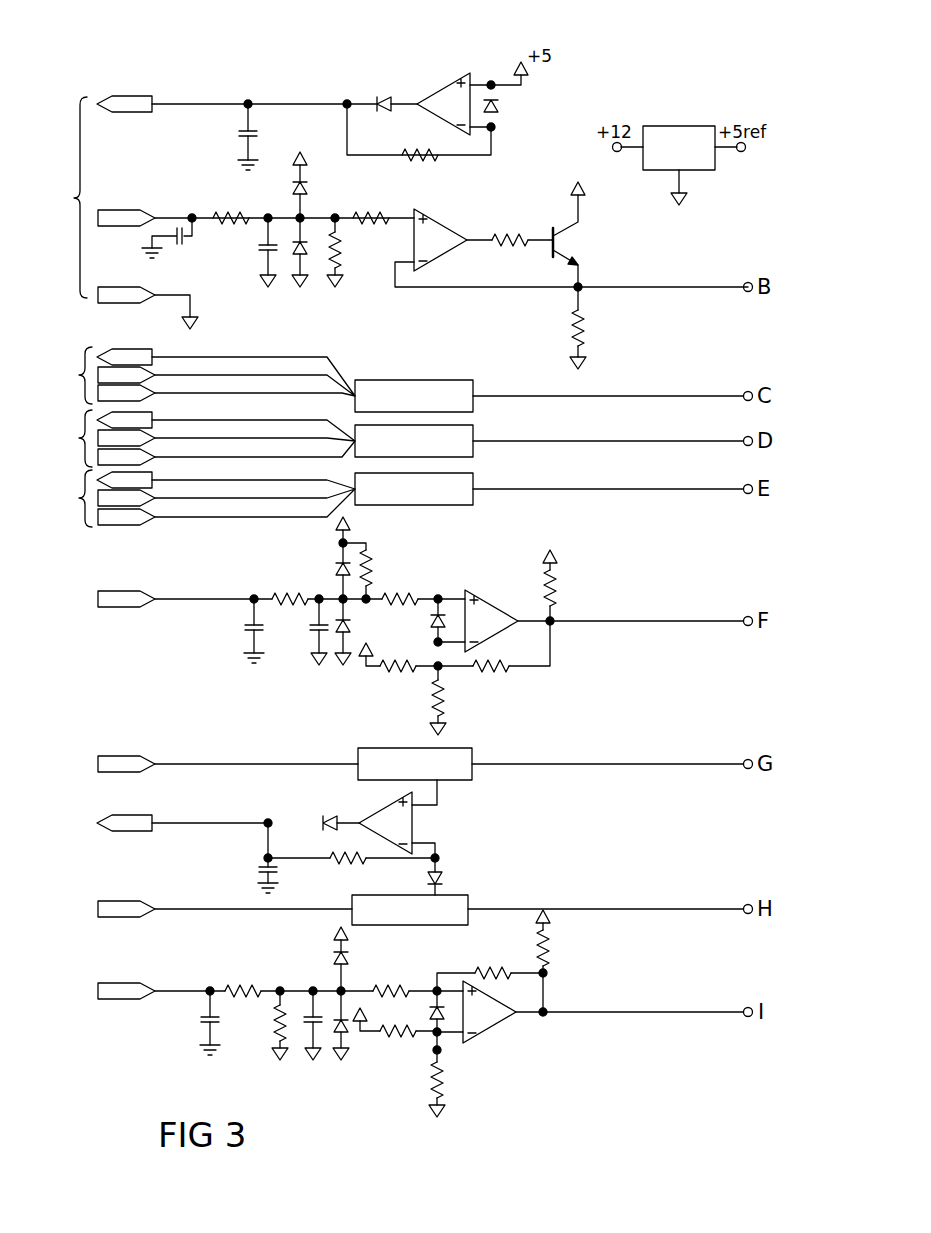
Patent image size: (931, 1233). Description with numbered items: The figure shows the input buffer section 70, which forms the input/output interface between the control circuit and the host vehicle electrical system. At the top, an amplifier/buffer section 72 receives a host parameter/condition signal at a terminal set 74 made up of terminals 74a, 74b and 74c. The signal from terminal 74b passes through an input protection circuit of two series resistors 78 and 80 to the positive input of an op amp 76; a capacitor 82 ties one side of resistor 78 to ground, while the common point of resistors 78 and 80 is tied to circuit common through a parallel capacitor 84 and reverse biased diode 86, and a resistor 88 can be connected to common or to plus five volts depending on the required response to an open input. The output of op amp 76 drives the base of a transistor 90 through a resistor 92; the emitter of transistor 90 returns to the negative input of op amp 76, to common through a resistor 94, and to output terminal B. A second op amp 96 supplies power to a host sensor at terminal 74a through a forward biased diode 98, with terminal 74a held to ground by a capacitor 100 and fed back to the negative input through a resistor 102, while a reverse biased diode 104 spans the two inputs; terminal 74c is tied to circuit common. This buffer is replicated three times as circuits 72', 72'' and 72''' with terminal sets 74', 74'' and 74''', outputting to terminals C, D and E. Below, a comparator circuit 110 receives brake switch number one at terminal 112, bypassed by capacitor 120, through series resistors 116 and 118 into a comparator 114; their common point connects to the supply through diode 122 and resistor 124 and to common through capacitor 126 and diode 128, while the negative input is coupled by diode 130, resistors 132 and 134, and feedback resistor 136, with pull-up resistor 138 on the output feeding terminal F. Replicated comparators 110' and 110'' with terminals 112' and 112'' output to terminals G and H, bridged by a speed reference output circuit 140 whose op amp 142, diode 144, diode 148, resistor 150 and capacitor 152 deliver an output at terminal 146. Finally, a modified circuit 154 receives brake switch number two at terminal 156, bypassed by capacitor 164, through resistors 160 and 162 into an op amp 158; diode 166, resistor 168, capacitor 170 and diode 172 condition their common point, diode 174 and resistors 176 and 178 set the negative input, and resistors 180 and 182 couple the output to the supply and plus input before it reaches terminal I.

The input buffer section 70 is at (123, 58).
The amplifier/buffer section 72 is at (502, 150).
The terminal set 74 is at (65, 197).
The output terminal 74a is at (134, 100).
The terminal 74b is at (132, 212).
The terminal 74c is at (138, 300).
The terminal set 74' is at (99, 375).
The terminal set 74'' is at (96, 439).
The terminal set 74''' is at (94, 499).
The amplifier/buffer circuit 72' is at (414, 396).
The amplifier/buffer circuit 72'' is at (414, 441).
The amplifier/buffer circuit 72''' is at (414, 489).
The op amp 76 is at (440, 226).
The resistor 78 is at (226, 215).
The resistor 80 is at (370, 212).
The capacitor 82 is at (182, 244).
The capacitor 84 is at (258, 260).
The diode 86 is at (304, 262).
The resistor 88 is at (344, 256).
The transistor 90 is at (570, 238).
The resistor 92 is at (504, 234).
The resistor 94 is at (586, 326).
The op amp 96 is at (448, 92).
The diode 98 is at (386, 98).
The capacitor 100 is at (240, 133).
The resistor 102 is at (416, 152).
The diode 104 is at (500, 104).
The circuit 110 is at (492, 552).
The comparator circuit 110' is at (415, 764).
The comparator circuit 110'' is at (410, 910).
The terminal 112 is at (117, 577).
The terminal 112' is at (117, 742).
The terminal 112'' is at (116, 926).
The comparator 114 is at (492, 606).
The resistor 116 is at (290, 590).
The resistor 118 is at (396, 595).
The capacitor 120 is at (244, 632).
The diode 122 is at (336, 568).
The resistor 124 is at (371, 569).
The capacitor 126 is at (308, 638).
The diode 128 is at (350, 637).
The diode 130 is at (432, 632).
The resistor 132 is at (376, 672).
The resistor 134 is at (446, 704).
The resistor 136 is at (502, 670).
The resistor 138 is at (558, 590).
The speed reference output circuit 140 is at (477, 830).
The op amp 142 is at (386, 822).
The diode 144 is at (445, 876).
The output terminal 146 is at (134, 828).
The diode 148 is at (324, 818).
The resistor 150 is at (340, 864).
The capacitor 152 is at (252, 872).
The modified circuit 154 is at (540, 1065).
The terminal 156 is at (124, 992).
The op amp 158 is at (488, 1016).
The resistor 160 is at (226, 984).
The resistor 162 is at (385, 986).
The capacitor 164 is at (200, 1020).
The diode 166 is at (334, 962).
The resistor 168 is at (276, 1044).
The capacitor 170 is at (304, 1020).
The diode 172 is at (350, 1030).
The diode 174 is at (424, 1012).
The resistor 176 is at (396, 1042).
The resistor 178 is at (446, 1072).
The resistor 180 is at (560, 948).
The resistor 182 is at (486, 972).